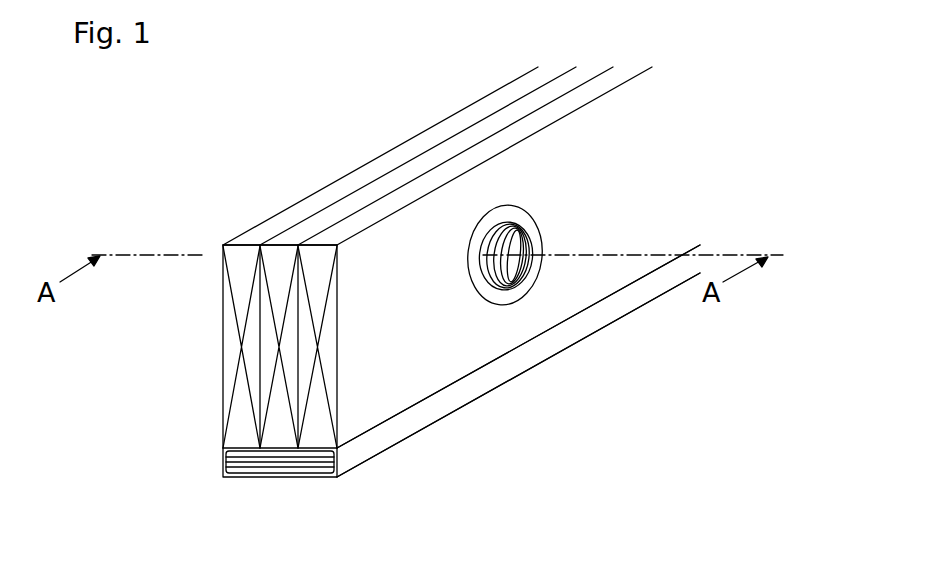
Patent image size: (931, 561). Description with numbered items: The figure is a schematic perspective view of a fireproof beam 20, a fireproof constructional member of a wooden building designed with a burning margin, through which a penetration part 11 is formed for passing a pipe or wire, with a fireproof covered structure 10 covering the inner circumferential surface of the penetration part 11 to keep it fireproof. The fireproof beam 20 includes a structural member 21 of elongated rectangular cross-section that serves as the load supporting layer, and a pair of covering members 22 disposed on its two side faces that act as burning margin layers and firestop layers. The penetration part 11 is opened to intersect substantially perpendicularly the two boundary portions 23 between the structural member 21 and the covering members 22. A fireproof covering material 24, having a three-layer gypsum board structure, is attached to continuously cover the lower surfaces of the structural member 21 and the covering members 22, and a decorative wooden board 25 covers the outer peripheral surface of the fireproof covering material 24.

The fireproof covered structure 10 is at (538, 211).
The penetration part 11 is at (525, 275).
The fireproof beam 20 is at (308, 190).
The structural member 21 is at (277, 257).
The covering members 22 is at (323, 353).
The boundary portions 23 is at (262, 305).
The fireproof covering material 24 is at (292, 451).
The decorative wooden board 25 is at (363, 445).